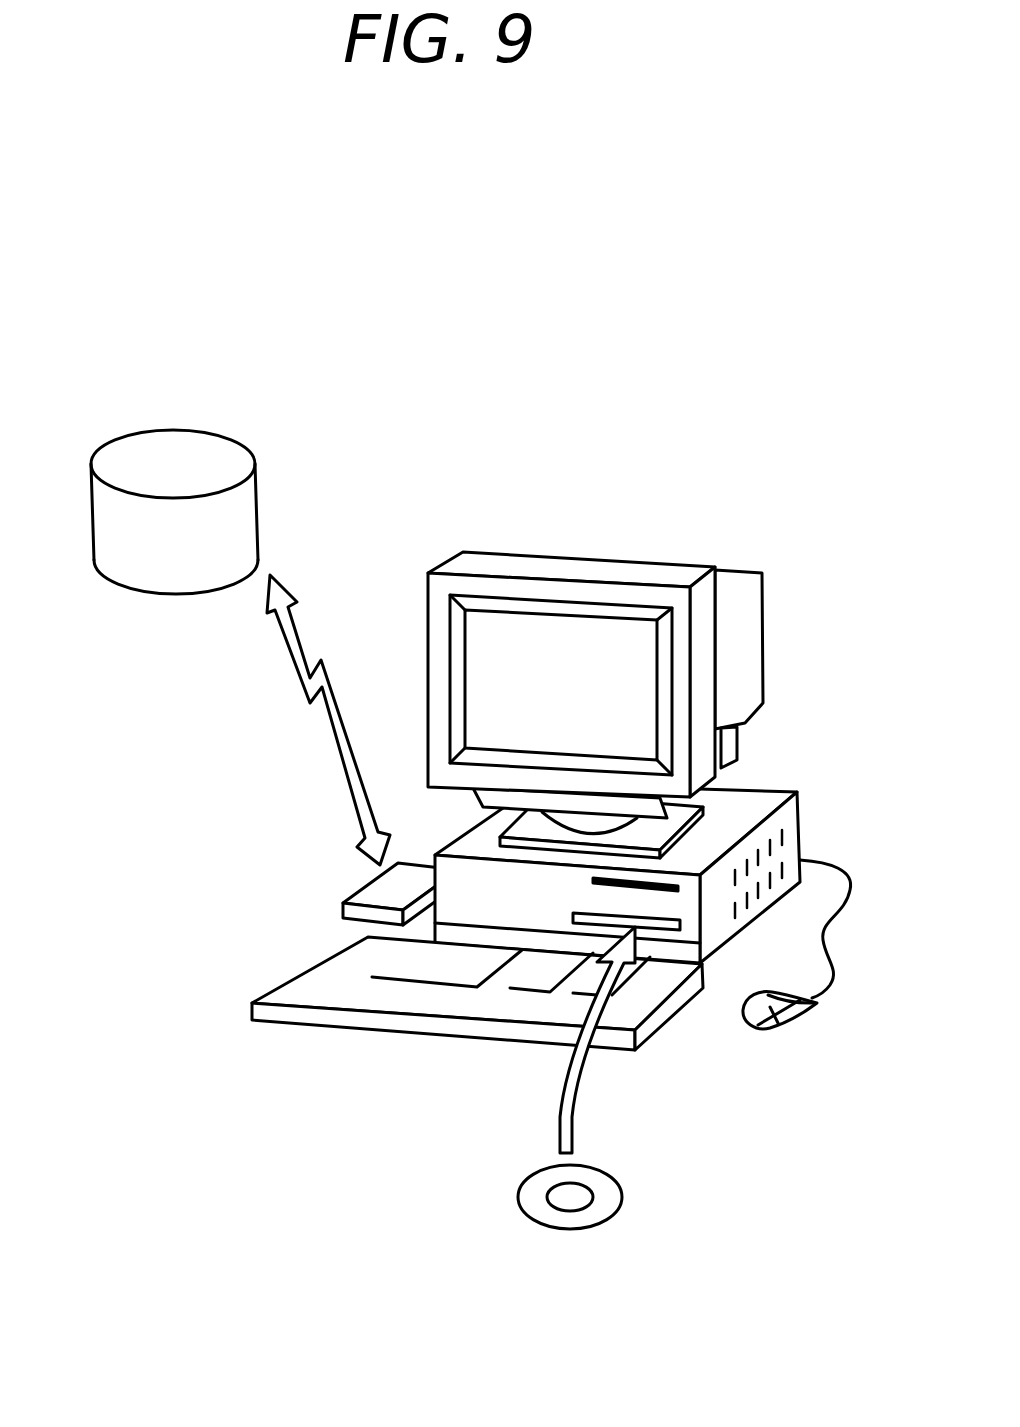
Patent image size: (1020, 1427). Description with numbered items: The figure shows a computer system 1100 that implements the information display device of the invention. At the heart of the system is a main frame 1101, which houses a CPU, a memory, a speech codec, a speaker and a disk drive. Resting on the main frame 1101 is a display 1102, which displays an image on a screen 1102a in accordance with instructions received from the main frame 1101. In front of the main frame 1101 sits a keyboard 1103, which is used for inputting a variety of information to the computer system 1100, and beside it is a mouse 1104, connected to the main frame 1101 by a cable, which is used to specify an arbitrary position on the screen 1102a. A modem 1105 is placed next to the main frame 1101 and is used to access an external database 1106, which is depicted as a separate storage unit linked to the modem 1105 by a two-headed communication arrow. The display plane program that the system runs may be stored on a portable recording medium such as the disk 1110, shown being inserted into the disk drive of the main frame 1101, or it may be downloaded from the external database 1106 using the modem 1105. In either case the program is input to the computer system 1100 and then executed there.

The computer system 1100 is at (497, 739).
The main frame 1101 is at (767, 785).
The display 1102 is at (637, 640).
The screen 1102a is at (537, 632).
The keyboard 1103 is at (320, 983).
The mouse 1104 is at (778, 1025).
The modem 1105 is at (370, 883).
The external database 1106 is at (173, 448).
The disk 1110 is at (623, 1203).